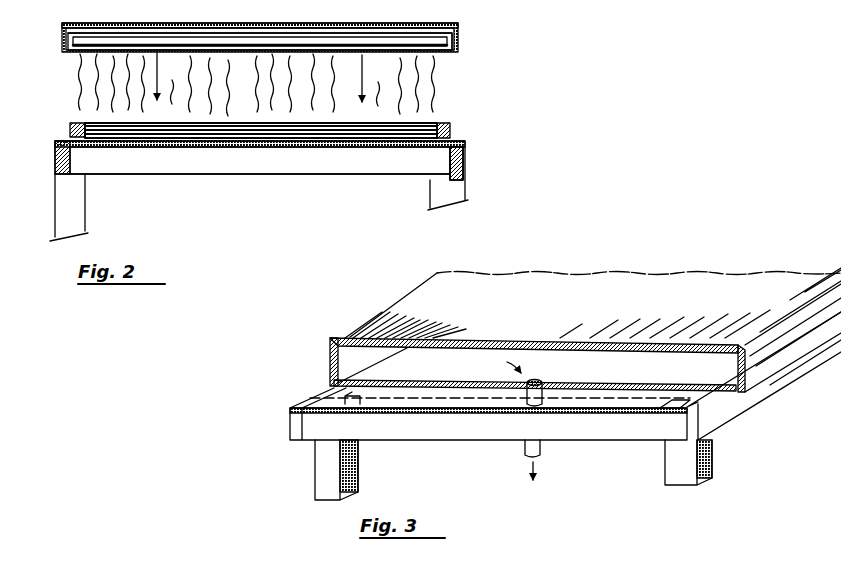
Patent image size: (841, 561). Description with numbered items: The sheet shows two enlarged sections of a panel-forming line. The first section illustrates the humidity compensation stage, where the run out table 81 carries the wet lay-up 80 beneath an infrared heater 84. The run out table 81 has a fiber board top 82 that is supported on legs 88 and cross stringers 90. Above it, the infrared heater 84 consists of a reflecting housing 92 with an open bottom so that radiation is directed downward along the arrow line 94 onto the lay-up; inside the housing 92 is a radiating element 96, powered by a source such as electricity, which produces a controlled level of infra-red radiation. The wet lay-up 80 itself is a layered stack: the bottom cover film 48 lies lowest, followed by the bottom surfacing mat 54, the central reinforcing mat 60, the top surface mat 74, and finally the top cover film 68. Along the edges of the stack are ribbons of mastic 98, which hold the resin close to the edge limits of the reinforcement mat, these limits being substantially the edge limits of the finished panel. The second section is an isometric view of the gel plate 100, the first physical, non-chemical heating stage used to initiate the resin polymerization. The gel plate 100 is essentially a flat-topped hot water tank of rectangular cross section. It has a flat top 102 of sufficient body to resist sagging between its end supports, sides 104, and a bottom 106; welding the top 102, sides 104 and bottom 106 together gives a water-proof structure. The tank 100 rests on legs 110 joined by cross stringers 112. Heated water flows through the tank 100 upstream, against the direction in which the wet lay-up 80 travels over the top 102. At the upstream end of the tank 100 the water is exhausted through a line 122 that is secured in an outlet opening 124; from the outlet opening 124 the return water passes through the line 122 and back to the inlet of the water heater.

In FIG. 2, the bottom cover film 48 is at (70, 131).
In FIG. 2, the bottom surfacing mat 54 is at (143, 125).
In FIG. 2, the central reinforcing mat 60 is at (190, 125).
In FIG. 2, the top cover film 68 is at (246, 107).
In FIG. 2, the top surface mat 74 is at (225, 125).
In FIG. 2, the wet lay-up 80 is at (435, 120).
In FIG. 2, the run out table 81 is at (470, 150).
In FIG. 2, the fiber board top 82 is at (465, 141).
In FIG. 2, the infrared heater 84 is at (460, 25).
In FIG. 2, the legs 88 is at (88, 201).
In FIG. 2, the cross stringers 90 is at (216, 176).
In FIG. 2, the reflecting housing 92 is at (62, 30).
In FIG. 2, the arrow line 94 is at (166, 67).
In FIG. 2, the radiating element 96 is at (70, 47).
In FIG. 2, the ribbons of mastic 98 is at (72, 125).
In FIG. 3, the gel plate 100 is at (610, 272).
In FIG. 3, the flat top 102 is at (345, 336).
In FIG. 3, the sides 104 is at (331, 362).
In FIG. 3, the bottom 106 is at (712, 402).
In FIG. 3, the legs 110 is at (313, 466).
In FIG. 3, the cross stringers 112 is at (431, 440).
In FIG. 3, the line 122 is at (541, 447).
In FIG. 3, the outlet opening 124 is at (544, 376).